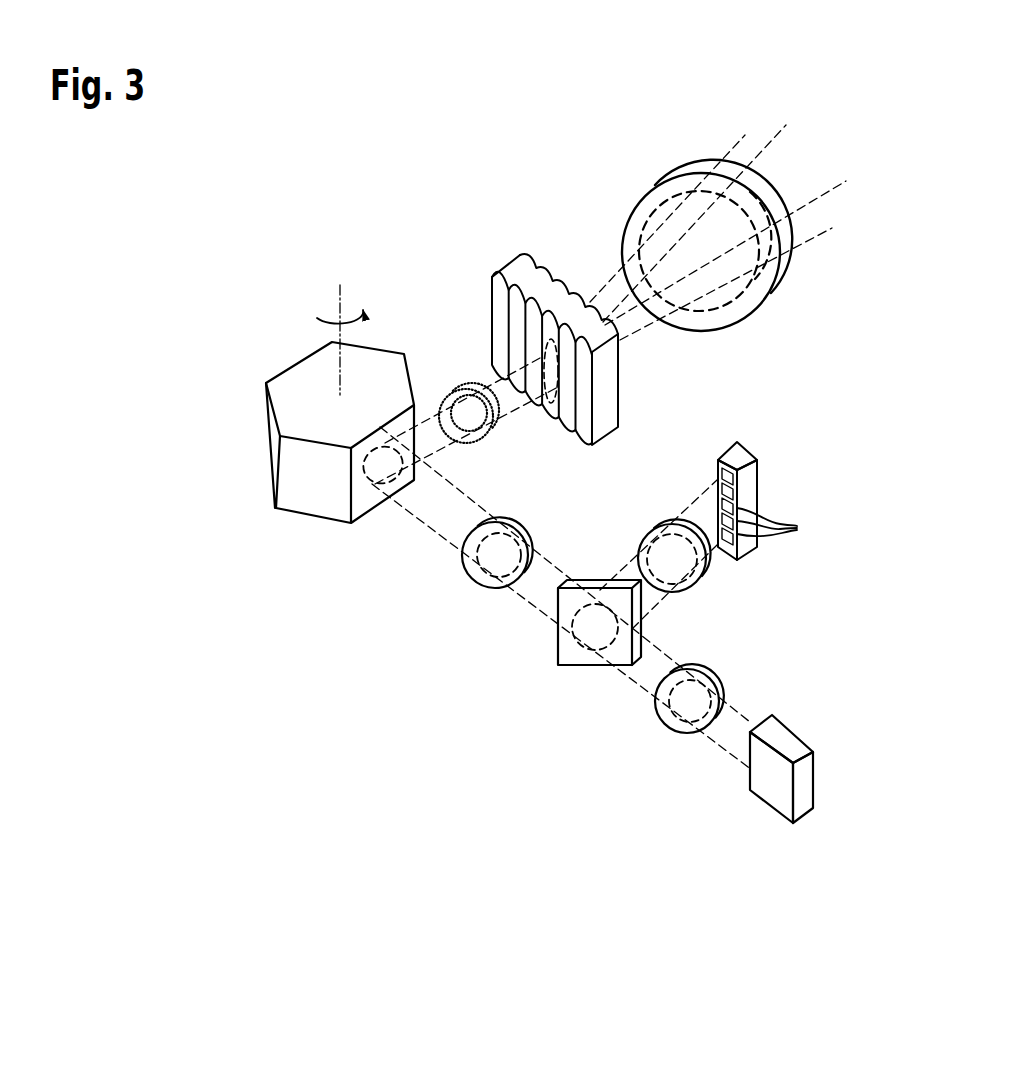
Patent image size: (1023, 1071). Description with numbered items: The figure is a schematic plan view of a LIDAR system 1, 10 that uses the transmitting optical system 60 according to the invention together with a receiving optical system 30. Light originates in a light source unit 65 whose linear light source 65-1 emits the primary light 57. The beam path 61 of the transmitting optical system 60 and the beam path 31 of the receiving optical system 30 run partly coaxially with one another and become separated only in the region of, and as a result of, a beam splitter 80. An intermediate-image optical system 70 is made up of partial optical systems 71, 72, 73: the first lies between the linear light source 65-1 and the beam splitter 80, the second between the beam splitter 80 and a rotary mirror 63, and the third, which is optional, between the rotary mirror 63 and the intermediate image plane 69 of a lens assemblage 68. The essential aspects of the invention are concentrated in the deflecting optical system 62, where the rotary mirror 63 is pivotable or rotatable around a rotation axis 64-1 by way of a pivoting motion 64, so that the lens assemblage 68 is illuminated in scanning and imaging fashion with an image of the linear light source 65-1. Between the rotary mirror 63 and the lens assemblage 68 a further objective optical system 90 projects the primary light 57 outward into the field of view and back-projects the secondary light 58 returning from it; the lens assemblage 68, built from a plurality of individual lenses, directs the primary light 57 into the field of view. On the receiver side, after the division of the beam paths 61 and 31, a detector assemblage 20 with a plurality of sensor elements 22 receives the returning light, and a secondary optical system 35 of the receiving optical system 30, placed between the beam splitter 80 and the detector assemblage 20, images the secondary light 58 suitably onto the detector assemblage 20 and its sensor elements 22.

The LIDAR system 1 is at (498, 468).
The LIDAR sensor device 10 is at (172, 212).
The detector assemblage 20 is at (755, 443).
The sensor elements 22 is at (782, 526).
The receiving optical system 30 is at (833, 462).
The beam path 31 is at (633, 577).
The secondary optical system 35 is at (657, 513).
The primary light 57 is at (887, 140).
The secondary light 58 is at (847, 122).
The transmitting optical system 60 is at (525, 768).
The beam path 61 is at (437, 512).
The deflecting optical system 62 is at (427, 137).
The rotary mirror 63 is at (283, 407).
The pivoting motion 64 is at (318, 322).
The rotation axis 64-1 is at (337, 292).
The light source unit 65 is at (818, 715).
The linear light source 65-1 is at (808, 783).
The lens assemblage 68 is at (508, 247).
The intermediate image plane 69 is at (483, 282).
The intermediate-image optical system 70 is at (540, 538).
The partial optical system 71 is at (657, 738).
The partial optical system 72 is at (465, 583).
The partial optical system 73 is at (452, 355).
The beam splitter 80 is at (545, 650).
The objective optical system 90 is at (625, 178).